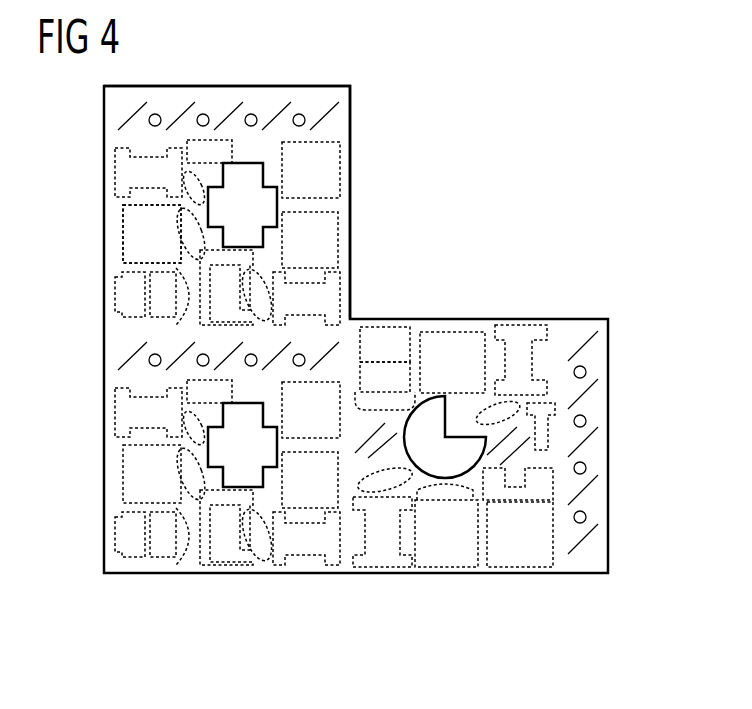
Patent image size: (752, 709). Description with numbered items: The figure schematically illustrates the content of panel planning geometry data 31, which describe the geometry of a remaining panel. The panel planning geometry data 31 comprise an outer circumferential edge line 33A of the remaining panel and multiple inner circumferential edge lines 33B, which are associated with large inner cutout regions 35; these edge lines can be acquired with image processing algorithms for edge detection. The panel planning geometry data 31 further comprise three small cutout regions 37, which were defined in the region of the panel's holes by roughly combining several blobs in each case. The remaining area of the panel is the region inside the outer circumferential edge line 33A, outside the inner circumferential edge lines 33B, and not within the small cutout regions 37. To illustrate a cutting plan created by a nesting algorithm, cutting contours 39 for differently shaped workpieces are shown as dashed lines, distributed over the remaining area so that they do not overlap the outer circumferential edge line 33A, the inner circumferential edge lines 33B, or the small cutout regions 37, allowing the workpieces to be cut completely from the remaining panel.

The panel planning geometry data 31 is at (550, 135).
The outer circumferential edge line 33A is at (350, 238).
The inner circumferential edge lines 33B is at (283, 196).
The inner cutout regions 35 is at (250, 194).
The small cutout regions 37 is at (118, 109).
The cutting contours 39 is at (130, 237).